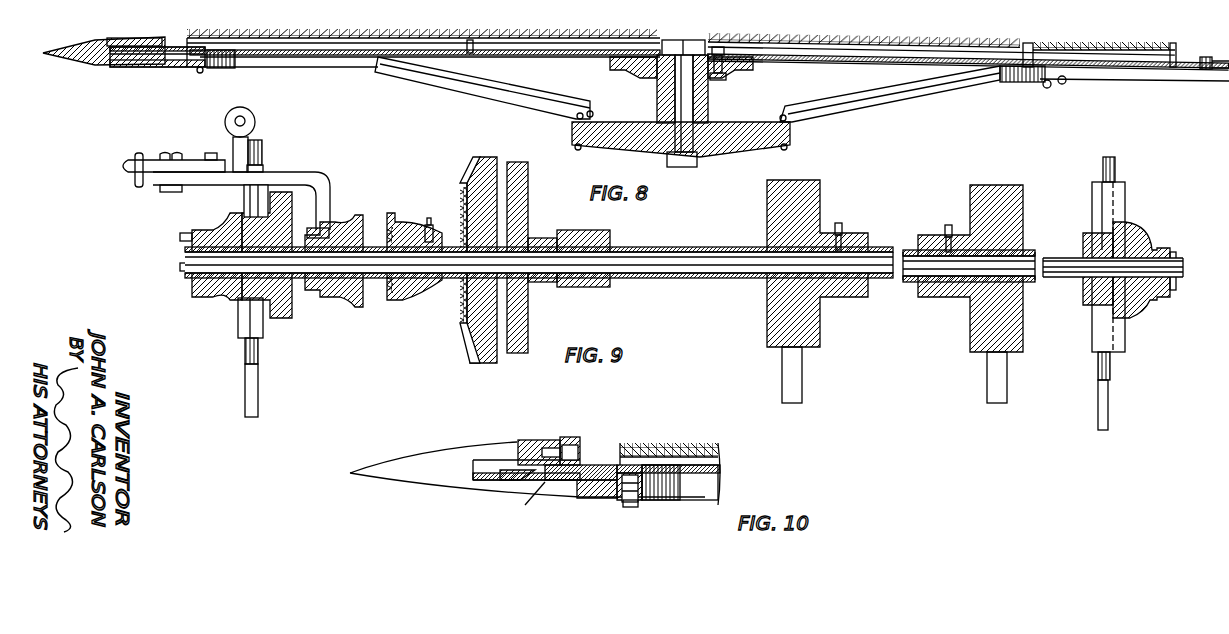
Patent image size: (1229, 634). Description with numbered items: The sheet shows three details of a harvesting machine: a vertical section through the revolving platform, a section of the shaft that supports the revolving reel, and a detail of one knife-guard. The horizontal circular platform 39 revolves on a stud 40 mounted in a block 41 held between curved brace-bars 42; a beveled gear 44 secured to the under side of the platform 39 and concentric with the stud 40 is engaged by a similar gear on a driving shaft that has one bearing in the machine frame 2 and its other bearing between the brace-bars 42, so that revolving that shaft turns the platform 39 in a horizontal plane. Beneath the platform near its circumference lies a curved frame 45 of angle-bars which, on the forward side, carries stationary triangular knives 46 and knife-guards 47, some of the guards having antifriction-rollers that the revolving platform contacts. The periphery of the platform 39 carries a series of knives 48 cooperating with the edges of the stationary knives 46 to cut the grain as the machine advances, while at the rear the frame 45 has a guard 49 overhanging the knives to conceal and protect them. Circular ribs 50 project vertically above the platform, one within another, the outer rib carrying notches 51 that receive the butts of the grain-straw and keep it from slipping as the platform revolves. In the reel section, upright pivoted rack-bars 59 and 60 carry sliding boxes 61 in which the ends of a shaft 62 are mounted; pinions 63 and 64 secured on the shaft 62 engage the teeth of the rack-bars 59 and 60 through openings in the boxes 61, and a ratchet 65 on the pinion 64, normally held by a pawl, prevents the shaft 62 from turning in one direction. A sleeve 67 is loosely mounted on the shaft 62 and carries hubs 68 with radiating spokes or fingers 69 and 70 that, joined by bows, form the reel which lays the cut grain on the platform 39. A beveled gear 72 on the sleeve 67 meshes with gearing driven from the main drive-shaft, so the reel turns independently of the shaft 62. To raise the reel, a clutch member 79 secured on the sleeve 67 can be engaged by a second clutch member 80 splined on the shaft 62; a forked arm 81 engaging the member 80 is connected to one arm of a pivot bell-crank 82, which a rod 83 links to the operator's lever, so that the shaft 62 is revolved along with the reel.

In FIG. 8, the frame 2 is at (1030, 84).
In FIG. 8, the horizontal circular platform 39 is at (800, 52).
In FIG. 10, the horizontal circular platform 39 is at (590, 462).
In FIG. 8, the stud 40 is at (712, 108).
In FIG. 8, the block 41 is at (770, 150).
In FIG. 8, the curved brace-bars 42 is at (480, 100).
In FIG. 8, the beveled gear 44 is at (630, 80).
In FIG. 8, the curved frame 45 is at (232, 70).
In FIG. 10, the curved frame 45 is at (665, 505).
In FIG. 8, the stationary triangular knives 46 is at (160, 67).
In FIG. 10, the stationary triangular knives 46 is at (580, 498).
In FIG. 8, the knife-guards 47 is at (95, 70).
In FIG. 10, the knife-guards 47 is at (430, 482).
In FIG. 8, the knives 48 is at (130, 43).
In FIG. 10, the knives 48 is at (510, 480).
In FIG. 8, the guard 49 is at (1222, 56).
In FIG. 8, the circular ribs 50 is at (472, 42).
In FIG. 8, the notches 51 is at (1070, 43).
In FIG. 10, the notches 51 is at (680, 445).
In FIG. 9, the rack-bar 59 is at (1108, 405).
In FIG. 9, the rack-bar 60 is at (258, 393).
In FIG. 9, the boxes 61 is at (240, 333).
In FIG. 9, the shaft 62 is at (1070, 268).
In FIG. 9, the pinion 63 is at (1135, 230).
In FIG. 9, the pinion 64 is at (232, 310).
In FIG. 9, the ratchet 65 is at (293, 315).
In FIG. 9, the sleeve 67 is at (735, 285).
In FIG. 9, the hubs 68 is at (820, 320).
In FIG. 9, the spokes or fingers 69 is at (800, 385).
In FIG. 9, the spokes or fingers 70 is at (985, 380).
In FIG. 9, the beveled gear 72 is at (470, 345).
In FIG. 9, the clutch member 79 is at (400, 300).
In FIG. 9, the clutch member 80 is at (345, 215).
In FIG. 9, the forked arm 81 is at (300, 178).
In FIG. 9, the pivot bell-crank 82 is at (195, 160).
In FIG. 9, the rod 83 is at (140, 190).